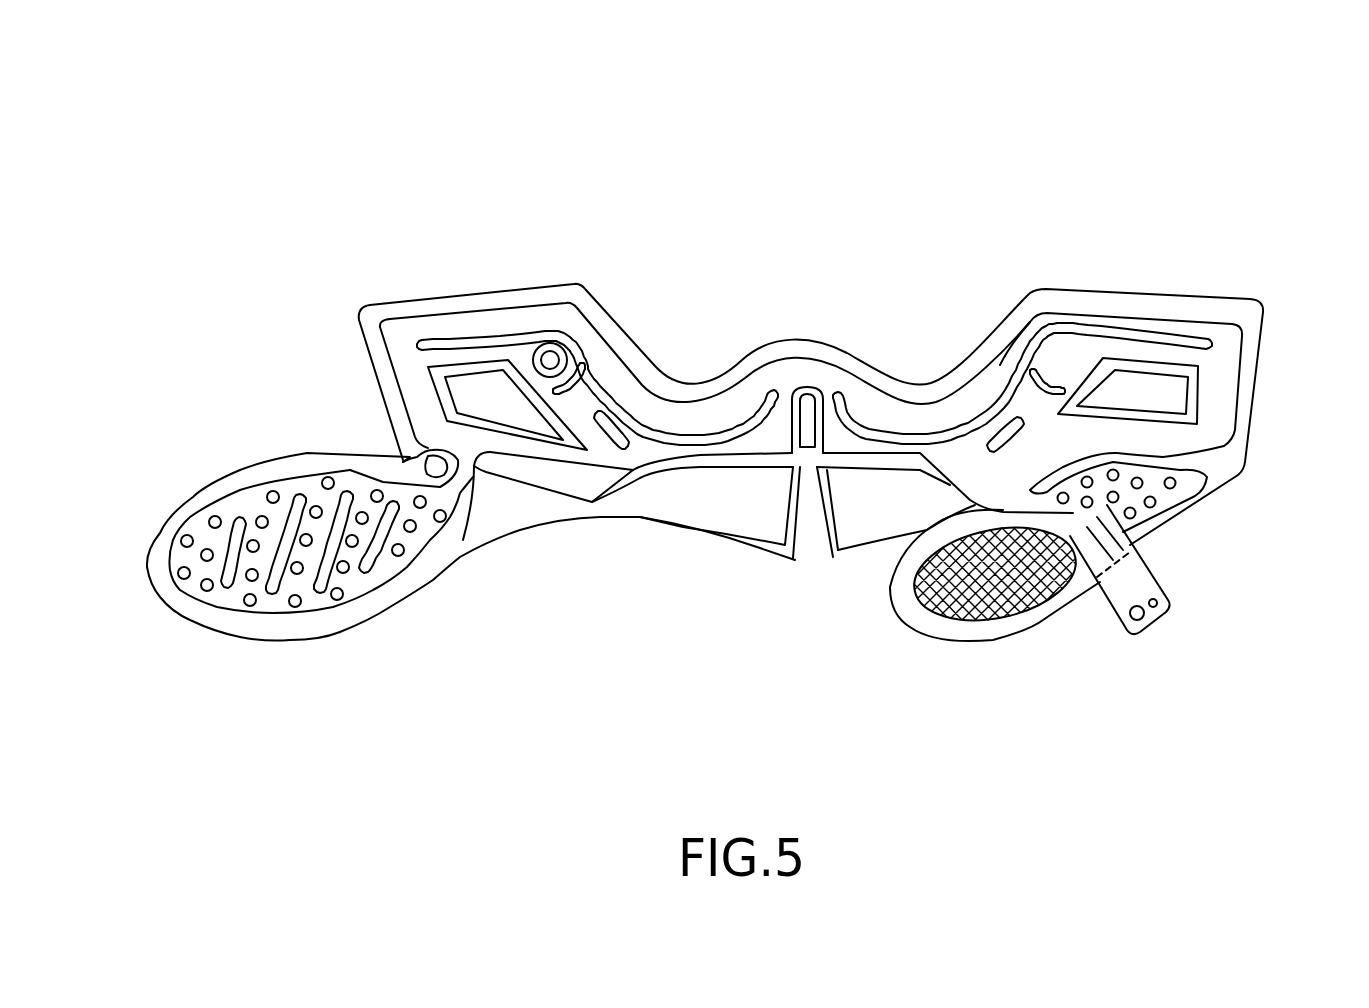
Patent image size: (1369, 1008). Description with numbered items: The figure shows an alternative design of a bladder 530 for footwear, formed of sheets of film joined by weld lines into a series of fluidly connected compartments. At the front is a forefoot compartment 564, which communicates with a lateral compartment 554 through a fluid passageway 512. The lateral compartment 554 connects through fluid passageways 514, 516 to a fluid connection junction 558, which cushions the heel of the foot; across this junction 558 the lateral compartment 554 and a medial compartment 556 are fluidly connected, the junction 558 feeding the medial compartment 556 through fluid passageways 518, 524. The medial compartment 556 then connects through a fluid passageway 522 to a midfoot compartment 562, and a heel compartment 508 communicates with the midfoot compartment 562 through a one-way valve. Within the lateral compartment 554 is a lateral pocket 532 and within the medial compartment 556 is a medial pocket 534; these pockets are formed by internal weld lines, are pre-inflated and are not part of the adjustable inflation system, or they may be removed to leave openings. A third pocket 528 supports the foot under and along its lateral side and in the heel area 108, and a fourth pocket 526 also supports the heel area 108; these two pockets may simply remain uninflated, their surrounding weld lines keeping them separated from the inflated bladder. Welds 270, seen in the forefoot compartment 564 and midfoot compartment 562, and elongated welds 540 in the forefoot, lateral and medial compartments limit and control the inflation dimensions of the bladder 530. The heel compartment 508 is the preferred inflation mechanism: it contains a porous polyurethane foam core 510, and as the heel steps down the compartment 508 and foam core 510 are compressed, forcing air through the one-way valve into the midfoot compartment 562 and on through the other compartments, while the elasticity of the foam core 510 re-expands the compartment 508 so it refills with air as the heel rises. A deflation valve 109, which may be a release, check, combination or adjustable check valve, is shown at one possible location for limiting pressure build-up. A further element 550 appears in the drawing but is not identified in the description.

The bladder 530 is at (357, 232).
The deflation valve 109 is at (536, 345).
The lateral compartment 554 is at (600, 403).
The fluid passageway 514 is at (633, 380).
The heel area 108 is at (728, 310).
The fluid connection junction 558 is at (807, 367).
The fluid passageway 518 is at (1038, 323).
The elongated welds 540 is at (440, 567).
The medial compartment 556 is at (1077, 360).
The medial pocket 534 is at (1177, 397).
The lateral pocket 532 is at (460, 392).
The fluid passageway 512 is at (420, 452).
The welds 270 is at (180, 570).
The forefoot compartment 564 is at (233, 597).
The third pocket 528 is at (663, 493).
The fluid passageway 516 is at (757, 438).
The fluid passageway 524 is at (840, 440).
The fluid passageway 522 is at (977, 488).
The fourth pocket 526 is at (837, 520).
The heel compartment 508 is at (950, 633).
The foam core 510 is at (1010, 613).
The strap 550 is at (1093, 537).
The midfoot compartment 562 is at (1207, 487).